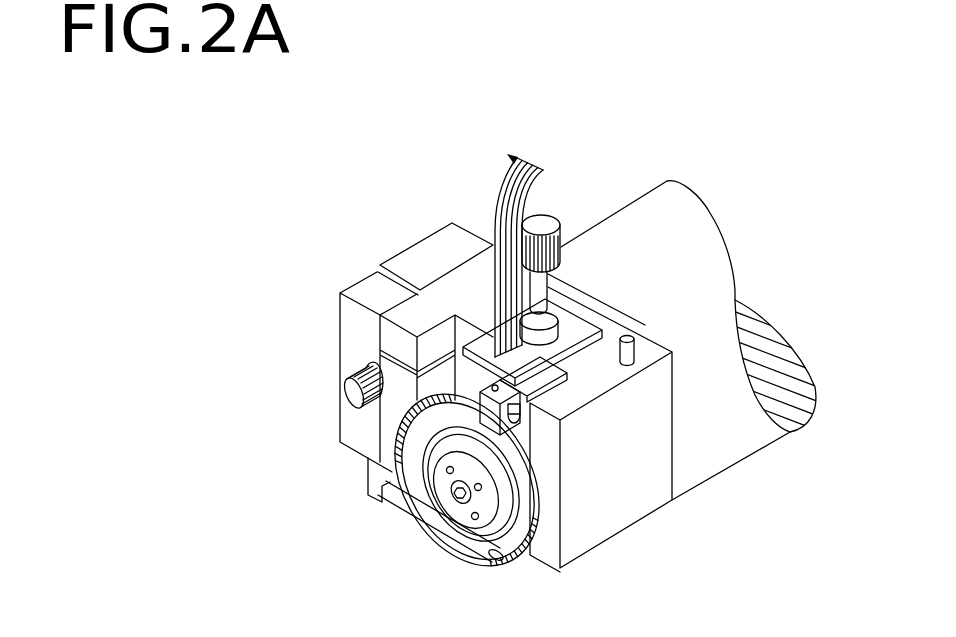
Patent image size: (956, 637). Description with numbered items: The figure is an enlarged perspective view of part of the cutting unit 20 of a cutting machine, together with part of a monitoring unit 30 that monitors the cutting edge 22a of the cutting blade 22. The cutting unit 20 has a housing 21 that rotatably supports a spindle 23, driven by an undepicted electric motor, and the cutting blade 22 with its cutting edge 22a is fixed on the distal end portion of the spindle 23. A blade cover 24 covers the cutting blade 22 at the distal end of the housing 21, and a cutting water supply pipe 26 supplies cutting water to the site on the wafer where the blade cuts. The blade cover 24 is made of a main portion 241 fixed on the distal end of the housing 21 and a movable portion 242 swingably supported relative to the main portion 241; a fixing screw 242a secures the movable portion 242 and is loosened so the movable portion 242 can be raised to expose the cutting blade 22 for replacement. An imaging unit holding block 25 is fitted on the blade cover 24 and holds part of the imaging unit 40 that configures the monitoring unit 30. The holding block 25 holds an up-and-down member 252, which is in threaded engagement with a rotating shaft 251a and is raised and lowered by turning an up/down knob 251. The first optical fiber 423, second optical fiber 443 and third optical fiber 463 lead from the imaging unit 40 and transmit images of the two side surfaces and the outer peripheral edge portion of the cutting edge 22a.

The cutting unit 20 is at (381, 241).
The housing 21 is at (660, 191).
The cutting blade 22 is at (538, 556).
The cutting edge 22a is at (512, 574).
The spindle 23 is at (457, 507).
The blade cover 24 is at (340, 347).
The main portion 241 is at (380, 261).
The movable portion 242 is at (353, 343).
The fixing screw 242a is at (352, 395).
The imaging unit holding block 25 is at (592, 318).
The up/down knob 251 is at (546, 222).
The rotating shaft 251a is at (553, 306).
The up-and-down member 252 is at (533, 413).
The cutting water supply pipe 26 is at (402, 505).
The monitoring unit 30 is at (504, 232).
The imaging unit 40 is at (594, 294).
The first optical fiber 423 is at (494, 217).
The second optical fiber 443 is at (527, 204).
The third optical fiber 463 is at (498, 192).